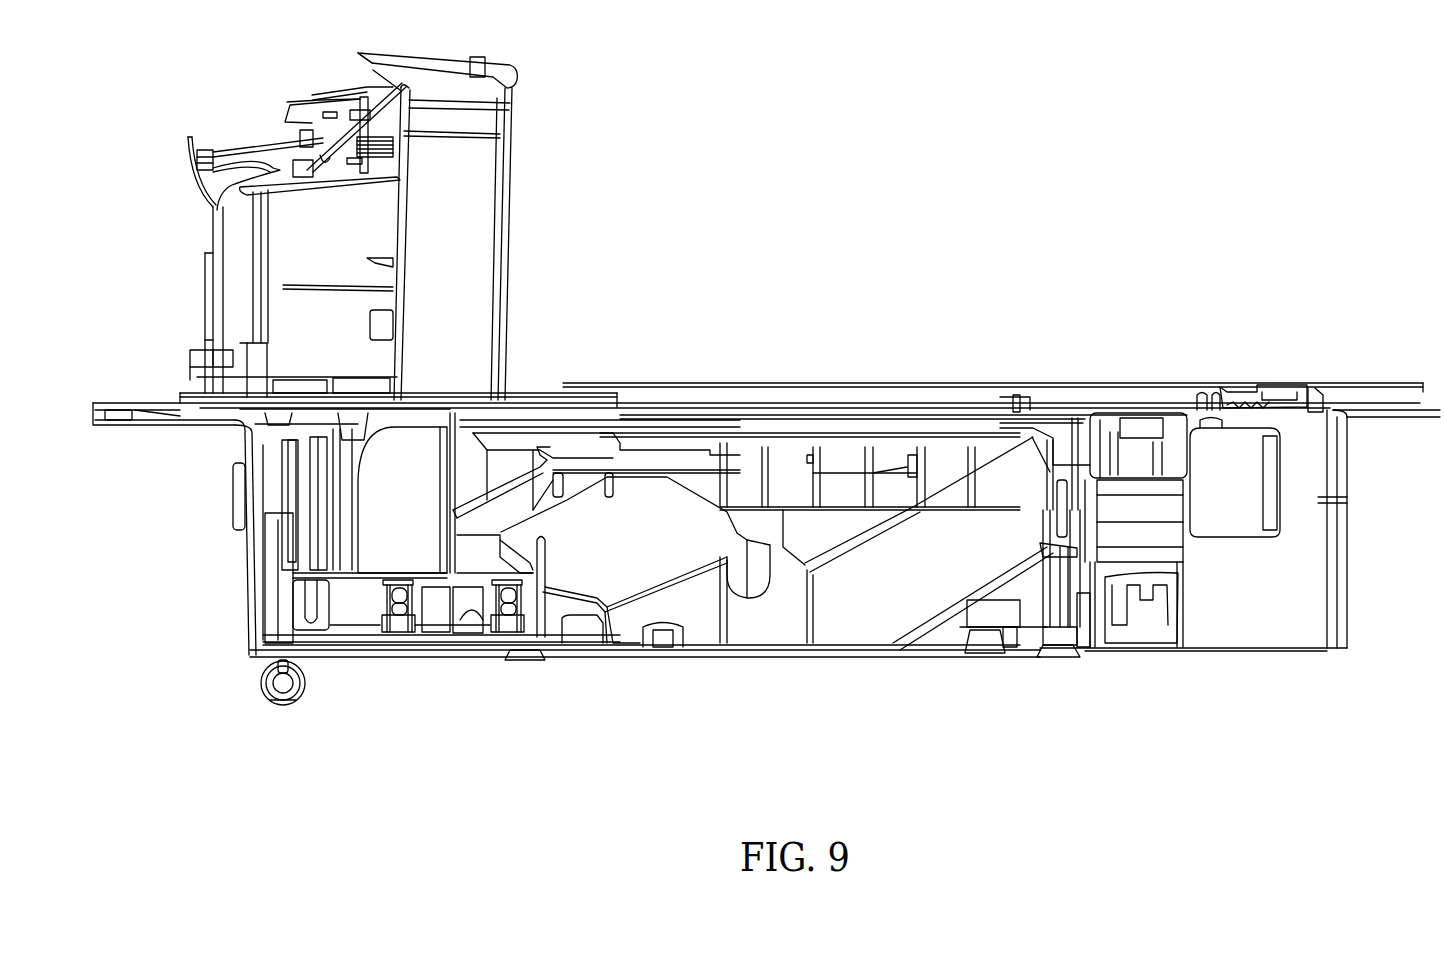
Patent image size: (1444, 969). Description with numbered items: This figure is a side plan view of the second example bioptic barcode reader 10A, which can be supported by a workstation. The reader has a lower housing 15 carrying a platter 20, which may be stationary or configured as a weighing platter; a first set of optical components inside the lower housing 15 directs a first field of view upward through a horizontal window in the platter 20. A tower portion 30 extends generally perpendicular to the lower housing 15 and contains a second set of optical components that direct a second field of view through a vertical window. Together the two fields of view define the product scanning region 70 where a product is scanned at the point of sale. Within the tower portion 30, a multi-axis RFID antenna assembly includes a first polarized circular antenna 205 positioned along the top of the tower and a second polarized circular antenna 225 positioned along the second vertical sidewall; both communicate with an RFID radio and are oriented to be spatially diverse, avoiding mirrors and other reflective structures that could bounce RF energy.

The bioptic barcode reader 10A is at (638, 102).
The lower housing 15 is at (1346, 597).
The platter 20 is at (1182, 385).
The tower portion 30 is at (511, 66).
The product scanning region 70 is at (687, 268).
The first polarized circular antenna 205 is at (337, 145).
The second polarized circular antenna 225 is at (213, 307).